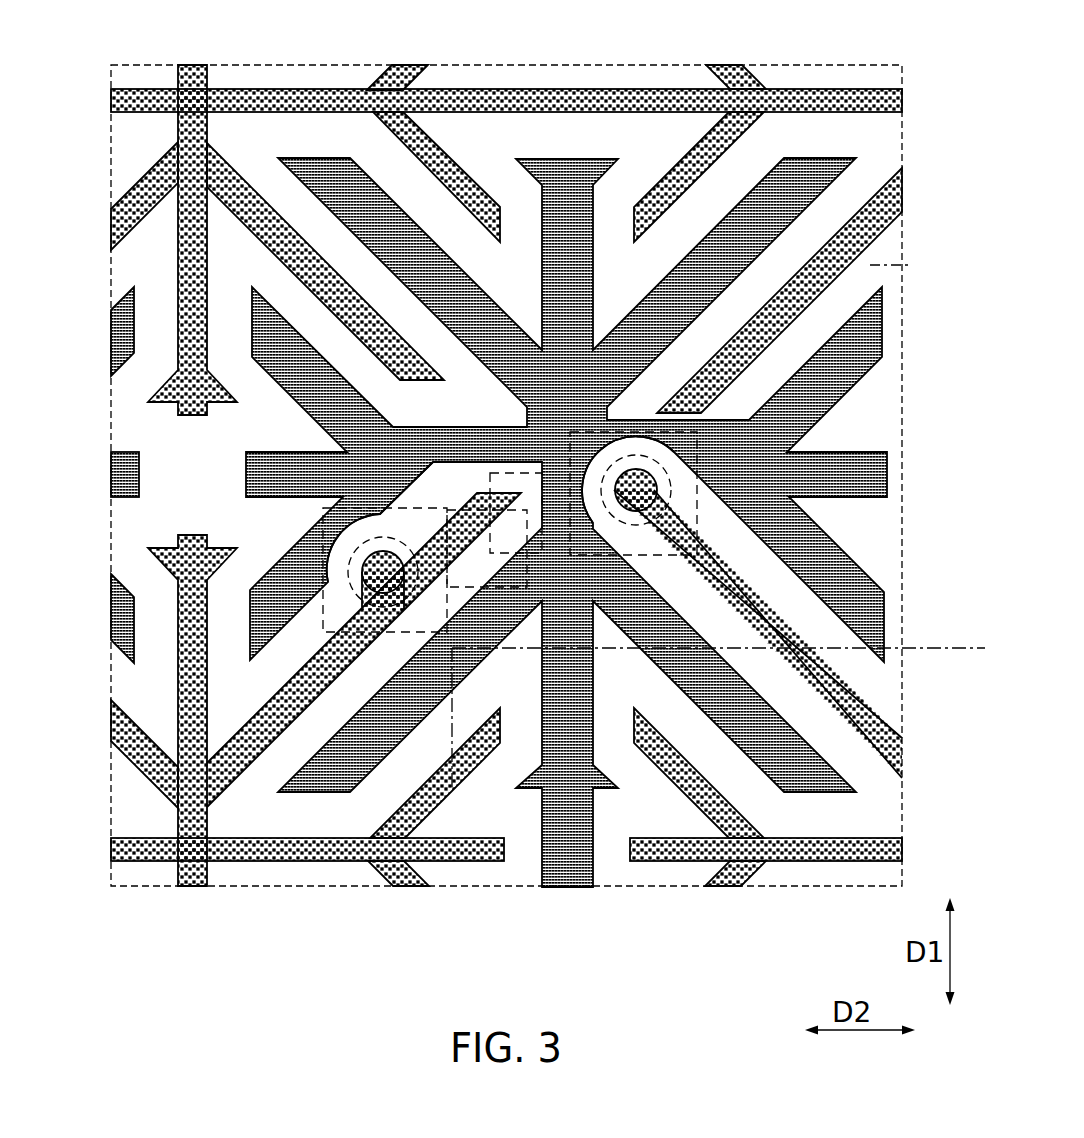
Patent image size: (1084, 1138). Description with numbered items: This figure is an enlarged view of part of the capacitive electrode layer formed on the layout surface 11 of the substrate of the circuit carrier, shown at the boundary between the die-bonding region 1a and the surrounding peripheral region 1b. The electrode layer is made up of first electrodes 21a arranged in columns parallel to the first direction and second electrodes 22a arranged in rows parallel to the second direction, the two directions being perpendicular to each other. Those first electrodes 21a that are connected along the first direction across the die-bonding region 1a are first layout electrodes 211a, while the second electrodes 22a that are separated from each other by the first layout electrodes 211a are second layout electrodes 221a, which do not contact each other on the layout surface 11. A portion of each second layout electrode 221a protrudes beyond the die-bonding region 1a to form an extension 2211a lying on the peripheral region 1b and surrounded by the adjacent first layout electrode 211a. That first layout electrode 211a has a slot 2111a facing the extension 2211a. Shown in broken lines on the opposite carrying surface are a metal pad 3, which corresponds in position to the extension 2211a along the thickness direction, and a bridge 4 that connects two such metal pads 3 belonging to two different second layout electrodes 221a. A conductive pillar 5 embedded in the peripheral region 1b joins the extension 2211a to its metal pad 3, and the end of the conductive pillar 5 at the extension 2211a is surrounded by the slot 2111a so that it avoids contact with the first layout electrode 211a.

The layout surface 11 is at (128, 134).
The first electrode 21a is at (127, 445).
The first layout electrode 211a is at (559, 892).
The slot 2111a is at (630, 432).
The second electrode 22a is at (577, 82).
The second layout electrode 221a is at (300, 870).
The extension 2211a is at (641, 492).
The metal pad 3 is at (705, 455).
The bridge 4 is at (503, 460).
The conductive pillar 5 is at (355, 546).
The die-bonding region 1a is at (850, 636).
The peripheral region 1b is at (910, 261).